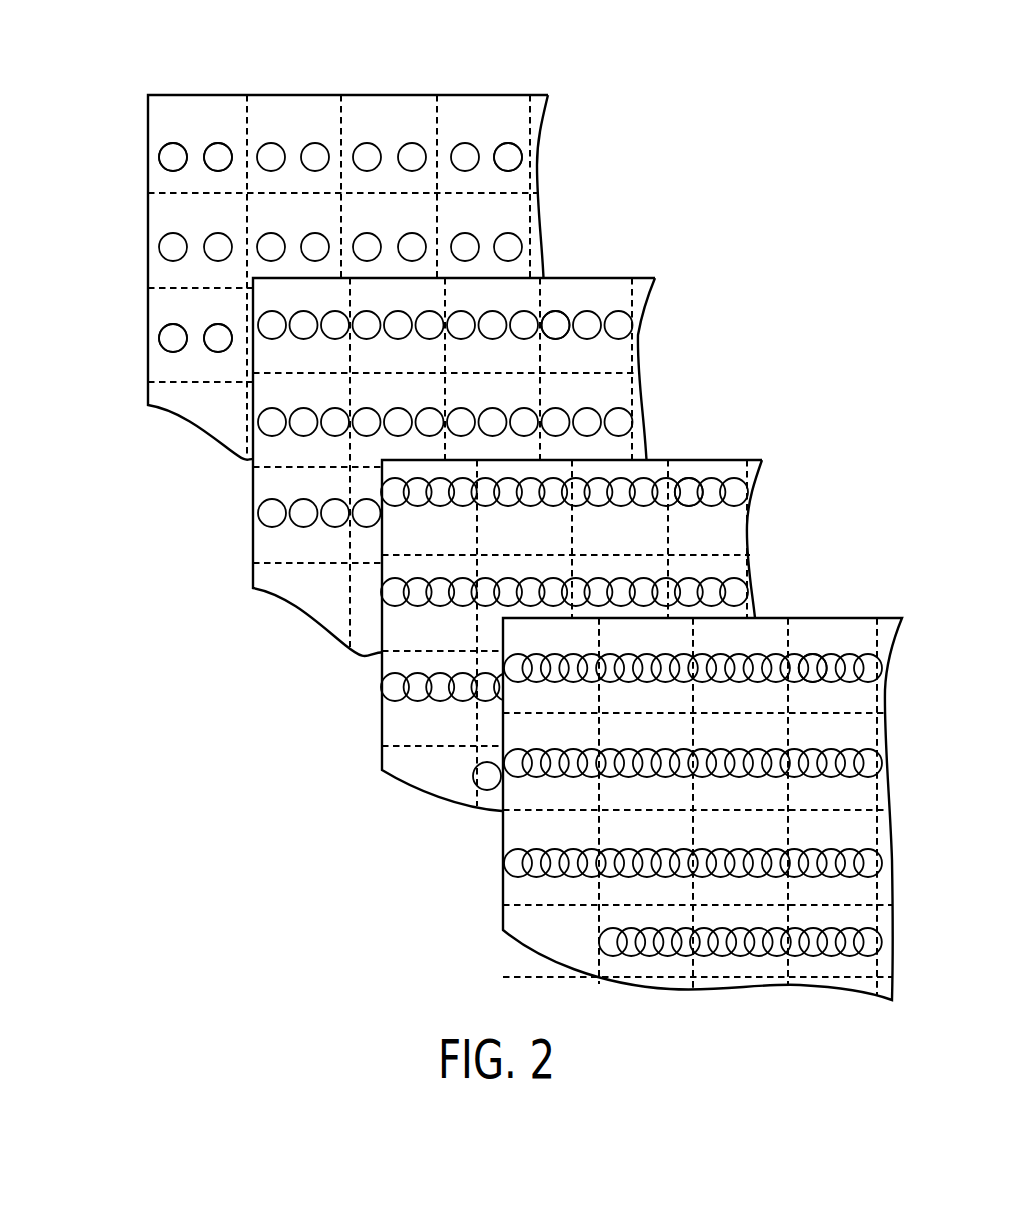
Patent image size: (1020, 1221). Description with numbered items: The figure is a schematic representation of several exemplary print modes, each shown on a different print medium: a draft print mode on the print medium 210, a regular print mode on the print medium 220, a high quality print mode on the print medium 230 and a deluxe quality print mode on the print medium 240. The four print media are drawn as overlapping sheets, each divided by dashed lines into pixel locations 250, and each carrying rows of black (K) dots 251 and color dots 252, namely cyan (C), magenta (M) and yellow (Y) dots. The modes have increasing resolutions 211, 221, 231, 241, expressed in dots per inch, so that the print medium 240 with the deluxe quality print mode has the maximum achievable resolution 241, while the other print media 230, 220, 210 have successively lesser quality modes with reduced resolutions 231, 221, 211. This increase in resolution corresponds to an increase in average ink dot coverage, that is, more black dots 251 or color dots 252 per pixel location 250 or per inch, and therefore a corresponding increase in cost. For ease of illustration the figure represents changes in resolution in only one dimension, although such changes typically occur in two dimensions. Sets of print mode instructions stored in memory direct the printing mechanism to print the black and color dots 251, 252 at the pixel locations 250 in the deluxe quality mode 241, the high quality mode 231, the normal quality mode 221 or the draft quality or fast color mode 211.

The print medium 210 is at (147, 243).
The print medium 220 is at (247, 511).
The print medium 230 is at (377, 685).
The print medium 240 is at (485, 864).
The resolution 211 is at (503, 174).
The resolution 221 is at (566, 346).
The resolution 231 is at (707, 514).
The maximum achievable resolution 241 is at (829, 693).
The pixel locations 250 is at (867, 618).
The black (K) dots 251 is at (218, 143).
The color dots 252 is at (208, 356).